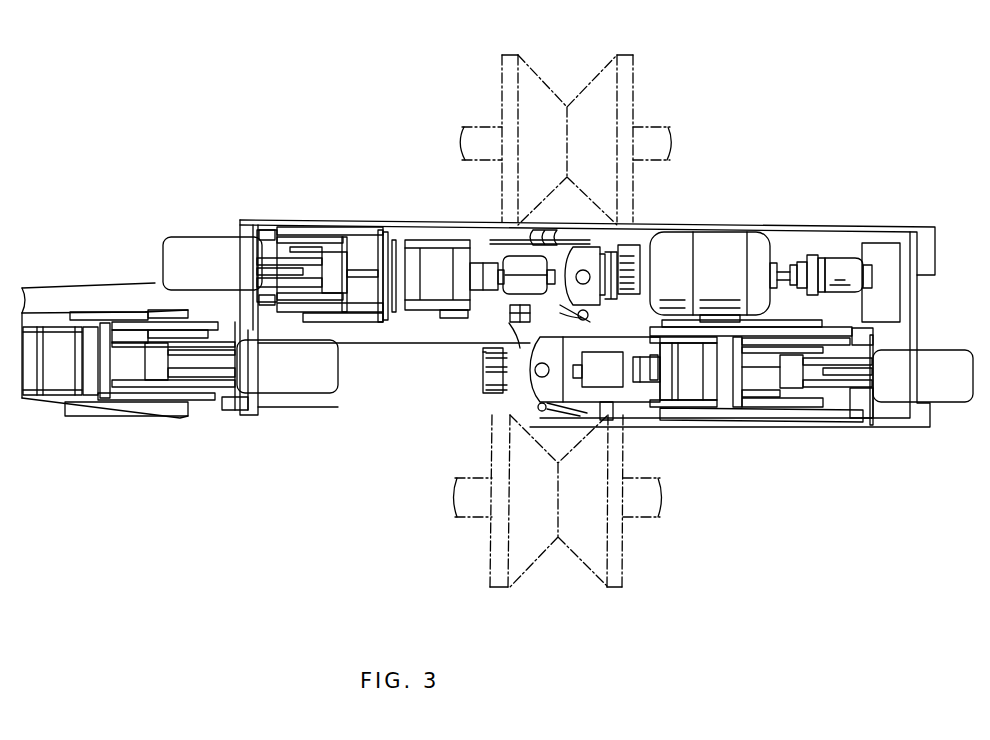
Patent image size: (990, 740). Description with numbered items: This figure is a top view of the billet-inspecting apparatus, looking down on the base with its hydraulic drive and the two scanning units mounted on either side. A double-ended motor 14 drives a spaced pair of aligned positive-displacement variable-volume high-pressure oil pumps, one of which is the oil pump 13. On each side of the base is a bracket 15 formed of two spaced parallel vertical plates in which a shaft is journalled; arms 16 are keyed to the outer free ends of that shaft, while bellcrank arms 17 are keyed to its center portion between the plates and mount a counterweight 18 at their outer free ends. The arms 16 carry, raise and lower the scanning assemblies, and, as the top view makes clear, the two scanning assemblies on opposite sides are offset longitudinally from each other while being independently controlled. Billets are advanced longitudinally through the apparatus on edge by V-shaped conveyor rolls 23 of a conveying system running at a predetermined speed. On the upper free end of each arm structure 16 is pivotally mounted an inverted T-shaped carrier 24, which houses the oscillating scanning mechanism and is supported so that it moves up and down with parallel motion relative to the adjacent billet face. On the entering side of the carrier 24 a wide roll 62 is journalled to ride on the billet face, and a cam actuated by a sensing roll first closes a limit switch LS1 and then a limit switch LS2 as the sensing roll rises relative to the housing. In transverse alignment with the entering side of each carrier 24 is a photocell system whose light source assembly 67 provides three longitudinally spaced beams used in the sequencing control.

The high-pressure oil pump 13 is at (838, 265).
The double-ended motor 14 is at (738, 248).
The bracket 15 is at (818, 405).
The arms 16 is at (762, 333).
The arms 17 is at (280, 255).
The counterweight 18 is at (162, 262).
The V-shaped conveyor rolls 23 is at (556, 80).
The inverted T-shaped carrier 24 is at (505, 232).
The wide roll 62 is at (590, 318).
The light source assembly 67 is at (640, 232).
The limit switch LS1 is at (513, 313).
The limit switch LS2 is at (500, 325).